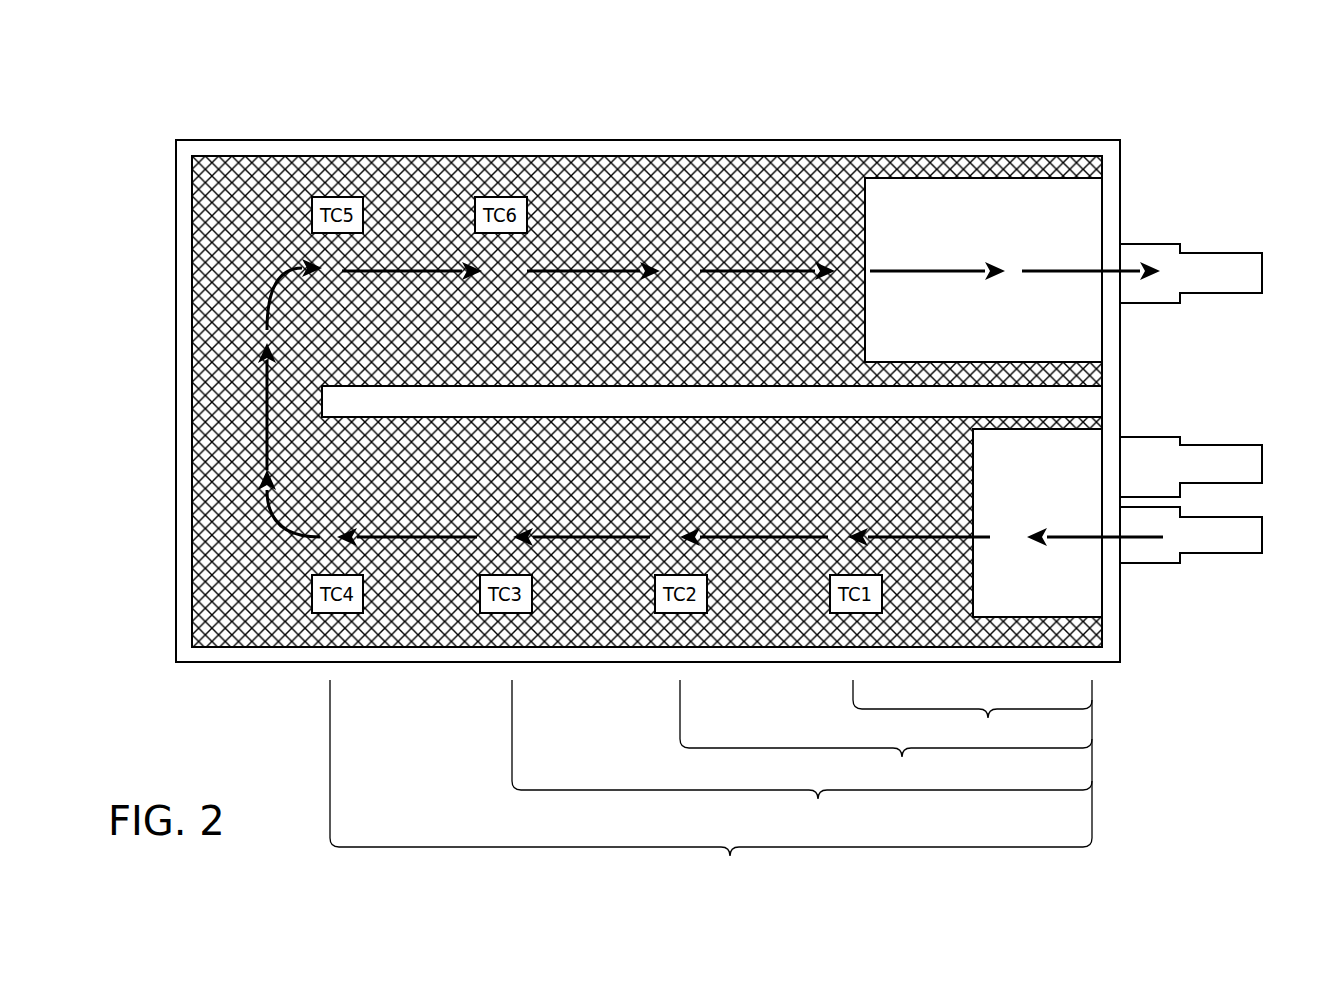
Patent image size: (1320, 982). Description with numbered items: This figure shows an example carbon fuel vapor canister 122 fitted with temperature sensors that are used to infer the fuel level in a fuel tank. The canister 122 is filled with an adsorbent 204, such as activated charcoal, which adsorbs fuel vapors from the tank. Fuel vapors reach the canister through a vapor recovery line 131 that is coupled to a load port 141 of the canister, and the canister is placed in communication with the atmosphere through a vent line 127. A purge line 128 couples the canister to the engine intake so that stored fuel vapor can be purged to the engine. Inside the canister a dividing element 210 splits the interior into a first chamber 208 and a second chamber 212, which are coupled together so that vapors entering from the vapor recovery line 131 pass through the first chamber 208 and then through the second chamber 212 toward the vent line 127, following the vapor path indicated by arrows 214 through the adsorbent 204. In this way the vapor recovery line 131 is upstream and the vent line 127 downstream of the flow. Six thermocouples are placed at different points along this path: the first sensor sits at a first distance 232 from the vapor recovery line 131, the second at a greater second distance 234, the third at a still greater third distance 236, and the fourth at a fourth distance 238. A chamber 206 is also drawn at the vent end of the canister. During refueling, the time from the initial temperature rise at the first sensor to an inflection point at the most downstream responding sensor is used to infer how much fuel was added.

The fuel vapor canister 122 is at (267, 138).
The adsorbent 204 is at (228, 568).
The outlet chamber 206 is at (930, 217).
The first chamber 208 is at (555, 615).
The dividing element 210 is at (452, 386).
The second chamber 212 is at (622, 193).
The arrows 214 is at (267, 397).
The vent line 127 is at (1230, 250).
The purge line 128 is at (1217, 445).
The vapor recovery line 131 is at (1217, 553).
The load port 141 is at (1067, 600).
The first distance 232 is at (972, 713).
The second distance 234 is at (886, 733).
The third distance 236 is at (802, 756).
The fourth distance 238 is at (711, 784).